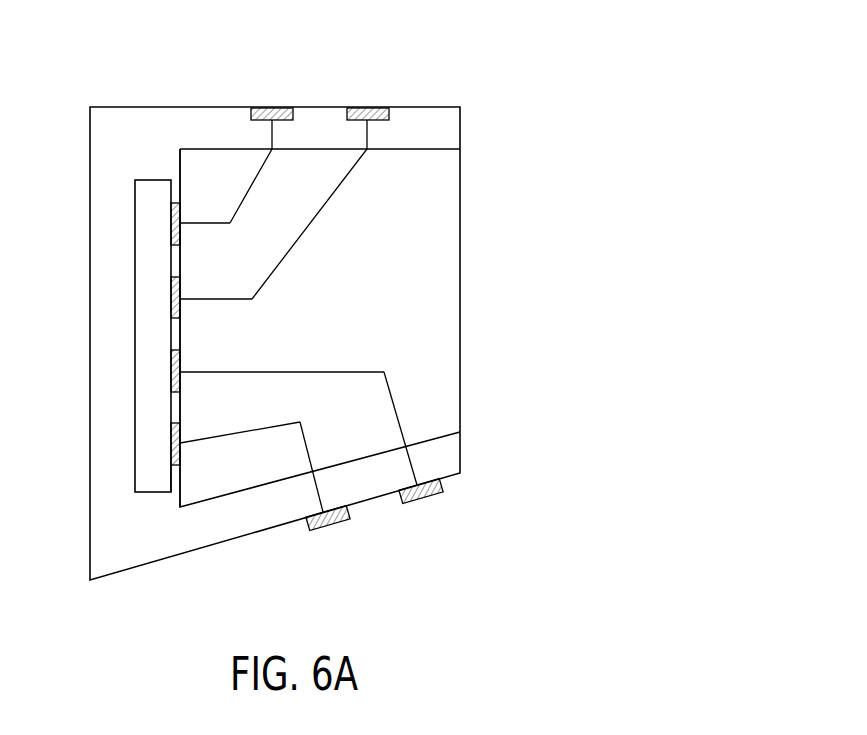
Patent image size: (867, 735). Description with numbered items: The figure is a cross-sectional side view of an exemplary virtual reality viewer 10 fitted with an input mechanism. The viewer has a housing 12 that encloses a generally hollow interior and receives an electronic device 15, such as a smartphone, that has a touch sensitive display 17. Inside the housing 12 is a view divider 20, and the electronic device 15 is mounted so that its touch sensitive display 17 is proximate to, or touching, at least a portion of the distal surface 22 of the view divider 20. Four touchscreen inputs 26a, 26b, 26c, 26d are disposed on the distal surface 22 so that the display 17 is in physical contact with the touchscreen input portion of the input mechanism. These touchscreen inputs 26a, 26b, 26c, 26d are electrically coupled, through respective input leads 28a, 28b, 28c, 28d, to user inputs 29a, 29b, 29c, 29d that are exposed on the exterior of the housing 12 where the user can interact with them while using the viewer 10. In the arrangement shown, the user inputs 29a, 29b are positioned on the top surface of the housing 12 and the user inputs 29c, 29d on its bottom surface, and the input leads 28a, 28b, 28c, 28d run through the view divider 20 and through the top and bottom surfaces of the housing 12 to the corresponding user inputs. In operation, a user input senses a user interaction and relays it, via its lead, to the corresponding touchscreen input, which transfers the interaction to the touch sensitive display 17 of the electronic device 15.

The viewer 10 is at (444, 70).
The housing 12 is at (137, 107).
The electronic device 15 is at (145, 257).
The touch sensitive display 17 is at (180, 336).
The view divider 20 is at (346, 310).
The distal surface 22 is at (168, 162).
The touchscreen input 26a is at (183, 232).
The touchscreen input 26b is at (183, 307).
The touchscreen input 26c is at (183, 380).
The touchscreen input 26d is at (183, 450).
The input lead 28a is at (262, 173).
The input lead 28b is at (318, 218).
The input lead 28c is at (398, 417).
The input lead 28d is at (309, 442).
The user input 29a is at (275, 114).
The user input 29b is at (364, 114).
The user input 29c is at (441, 493).
The user input 29d is at (338, 520).